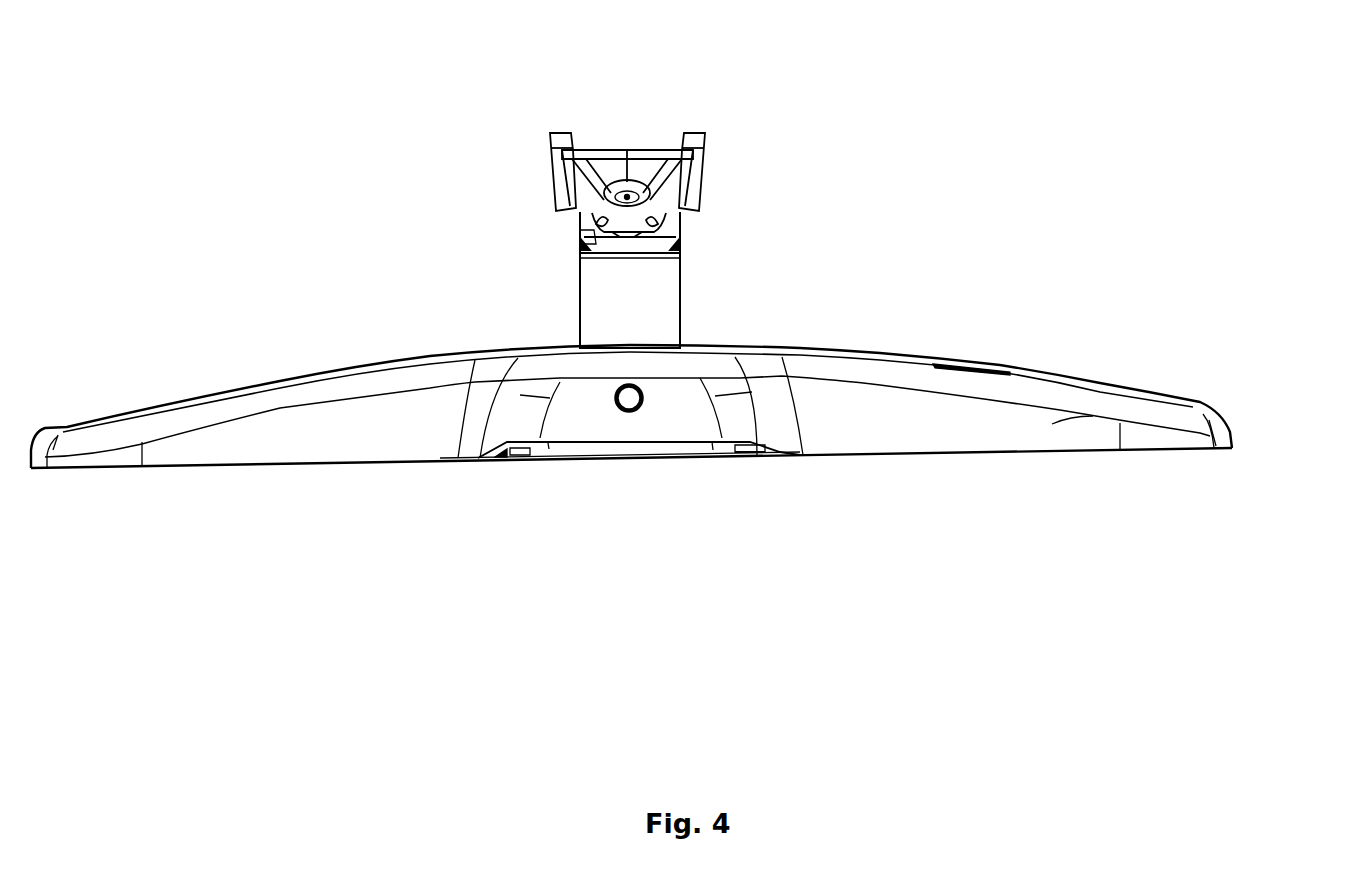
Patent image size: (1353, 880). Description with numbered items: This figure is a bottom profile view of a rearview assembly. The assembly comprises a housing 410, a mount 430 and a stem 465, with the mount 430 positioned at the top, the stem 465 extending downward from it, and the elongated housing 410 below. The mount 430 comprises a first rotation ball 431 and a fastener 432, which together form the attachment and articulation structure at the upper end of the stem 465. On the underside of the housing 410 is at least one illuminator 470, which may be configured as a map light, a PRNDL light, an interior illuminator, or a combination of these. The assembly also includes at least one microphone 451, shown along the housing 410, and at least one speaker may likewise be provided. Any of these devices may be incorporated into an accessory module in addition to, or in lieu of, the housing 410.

The housing 410 is at (1226, 418).
The mount 430 is at (645, 168).
The first rotation ball 431 is at (580, 236).
The fastener 432 is at (645, 201).
The microphone 451 is at (970, 364).
The stem 465 is at (660, 304).
The illuminator 470 is at (632, 398).